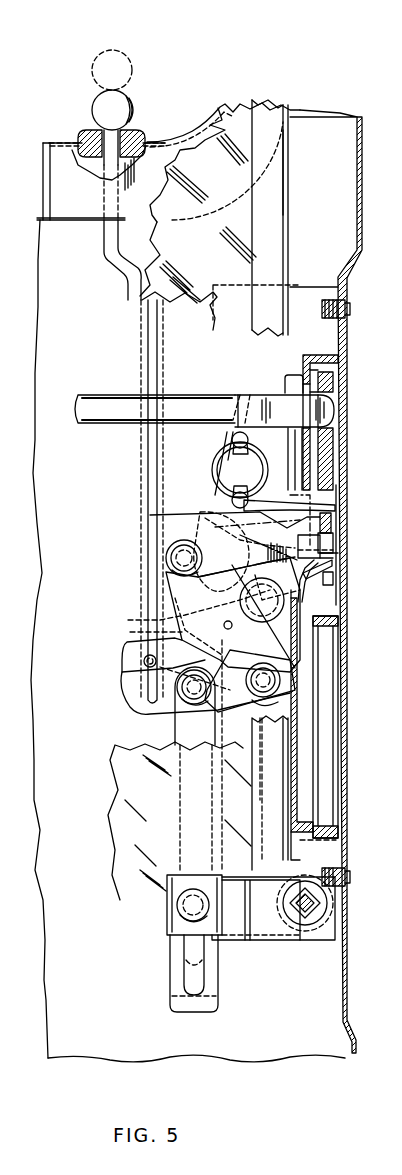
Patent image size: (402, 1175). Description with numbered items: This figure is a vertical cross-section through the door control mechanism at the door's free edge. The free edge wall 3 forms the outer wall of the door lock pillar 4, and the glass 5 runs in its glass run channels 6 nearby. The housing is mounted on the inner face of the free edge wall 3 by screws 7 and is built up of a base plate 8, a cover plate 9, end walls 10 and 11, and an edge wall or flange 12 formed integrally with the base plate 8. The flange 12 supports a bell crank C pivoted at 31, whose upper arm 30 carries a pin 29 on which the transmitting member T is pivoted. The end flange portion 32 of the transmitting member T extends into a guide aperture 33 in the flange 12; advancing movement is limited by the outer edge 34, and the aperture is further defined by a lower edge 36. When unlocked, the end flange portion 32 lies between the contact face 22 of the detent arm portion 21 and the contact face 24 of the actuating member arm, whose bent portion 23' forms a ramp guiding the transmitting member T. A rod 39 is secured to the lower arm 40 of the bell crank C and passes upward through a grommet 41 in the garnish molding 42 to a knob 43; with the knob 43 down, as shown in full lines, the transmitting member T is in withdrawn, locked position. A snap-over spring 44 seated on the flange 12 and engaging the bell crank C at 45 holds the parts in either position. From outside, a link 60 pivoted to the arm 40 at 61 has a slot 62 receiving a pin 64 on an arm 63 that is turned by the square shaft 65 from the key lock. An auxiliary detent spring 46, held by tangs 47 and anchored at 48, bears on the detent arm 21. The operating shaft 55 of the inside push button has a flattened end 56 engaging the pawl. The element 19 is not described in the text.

The free edge wall 3 is at (362, 208).
The door lock pillar 4 is at (330, 135).
The glass 5 is at (183, 167).
The glass run channels 6 is at (280, 230).
The screws 7 is at (350, 312).
The base plate 8 is at (338, 606).
The cover plate 9 is at (291, 772).
The end wall 10 is at (324, 356).
The end wall 11 is at (300, 840).
The edge wall or flange 12 is at (308, 292).
The slide bar 19 is at (326, 780).
The arm portion 21 is at (337, 526).
The contact face 22 is at (340, 540).
The bent portion of arm 23' is at (318, 585).
The contact face 24 is at (335, 583).
The pin 29 is at (166, 559).
The upper arm 30 is at (180, 580).
The pivot pin 31 is at (248, 722).
The end flange portion 32 is at (340, 552).
The guide aperture 33 is at (298, 526).
The outer edge 34 is at (334, 566).
The lower edge 36 is at (297, 565).
The rod 39 is at (149, 340).
The arm 40 is at (145, 715).
The grommet or washer 41 is at (134, 135).
The garnish molding 42 is at (56, 143).
The knob 43 is at (97, 112).
The snap-over spring 44 is at (262, 620).
The spring engagement point 45 is at (225, 622).
The auxiliary detent spring 46 is at (293, 503).
The tangs 47 is at (257, 443).
The anchor point 48 is at (225, 405).
The operating shaft 55 is at (97, 402).
The flattened end 56 is at (328, 412).
The link 60 is at (176, 744).
The pivot 61 is at (193, 712).
The slot 62 is at (190, 950).
The arm 63 is at (270, 920).
The pin 64 is at (176, 906).
The square shaft 65 is at (312, 920).
The bell crank C is at (150, 621).
The transmitting member T is at (206, 521).